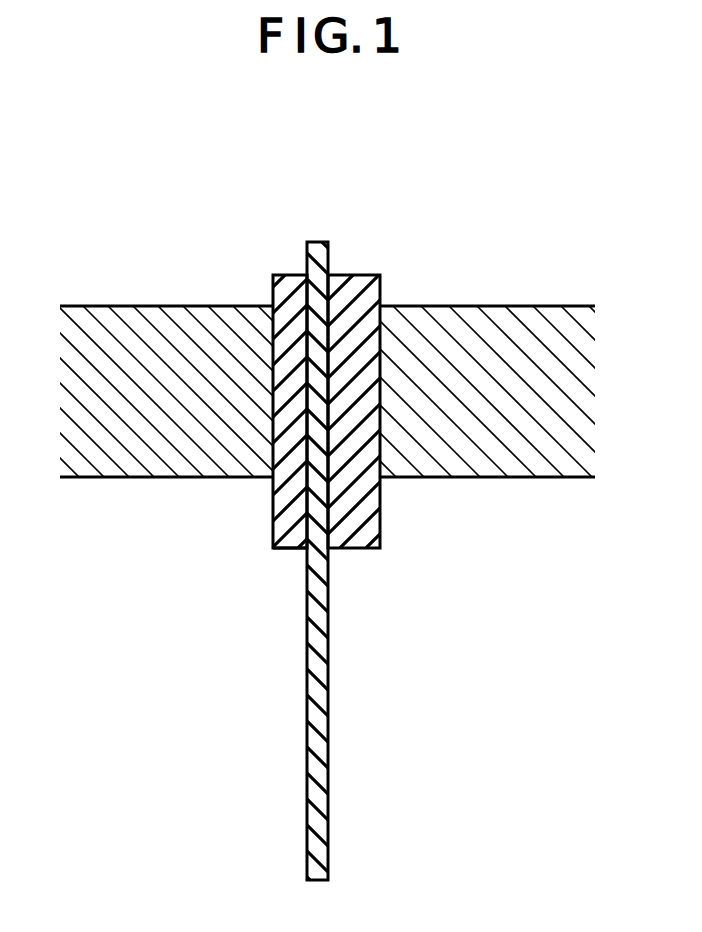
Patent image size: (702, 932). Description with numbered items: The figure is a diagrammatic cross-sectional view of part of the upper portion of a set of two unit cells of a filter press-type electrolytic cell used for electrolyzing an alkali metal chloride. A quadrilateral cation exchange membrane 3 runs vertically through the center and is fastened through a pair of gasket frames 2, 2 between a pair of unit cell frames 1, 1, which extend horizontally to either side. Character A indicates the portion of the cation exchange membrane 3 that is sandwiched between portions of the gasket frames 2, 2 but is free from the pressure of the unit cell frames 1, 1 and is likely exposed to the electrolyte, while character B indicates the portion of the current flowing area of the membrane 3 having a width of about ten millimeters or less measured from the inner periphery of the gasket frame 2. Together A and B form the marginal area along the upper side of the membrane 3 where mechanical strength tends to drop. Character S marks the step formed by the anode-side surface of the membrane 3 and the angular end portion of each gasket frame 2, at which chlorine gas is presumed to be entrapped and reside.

The unit cell frame 1 is at (137, 333).
The gasket frame 2 is at (282, 294).
The quadrilateral cation exchange membrane 3 is at (318, 240).
The step S is at (305, 552).
The portion of membrane sandwiched between gasket frame portions free from unit cell A is at (333, 482).
The portion of current flowing area of membrane B is at (333, 557).